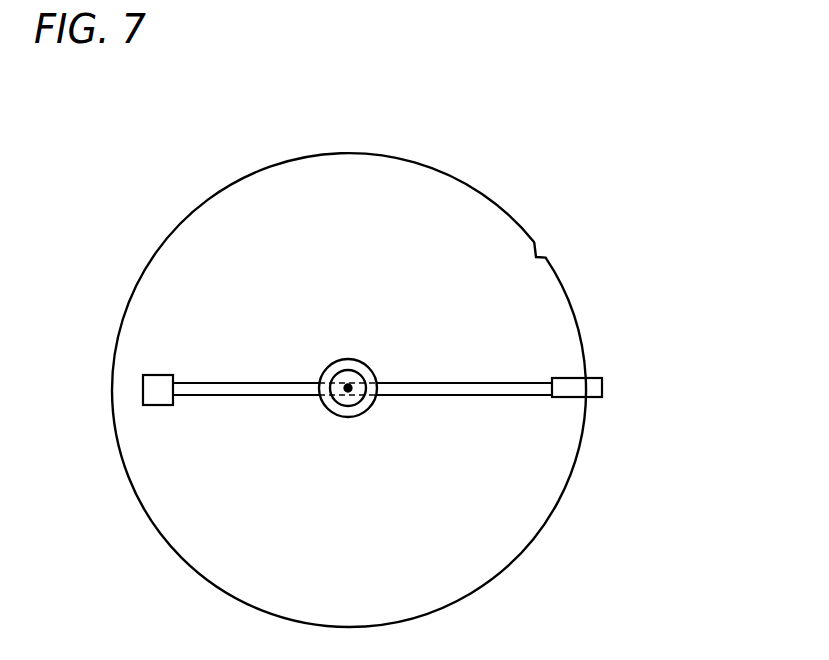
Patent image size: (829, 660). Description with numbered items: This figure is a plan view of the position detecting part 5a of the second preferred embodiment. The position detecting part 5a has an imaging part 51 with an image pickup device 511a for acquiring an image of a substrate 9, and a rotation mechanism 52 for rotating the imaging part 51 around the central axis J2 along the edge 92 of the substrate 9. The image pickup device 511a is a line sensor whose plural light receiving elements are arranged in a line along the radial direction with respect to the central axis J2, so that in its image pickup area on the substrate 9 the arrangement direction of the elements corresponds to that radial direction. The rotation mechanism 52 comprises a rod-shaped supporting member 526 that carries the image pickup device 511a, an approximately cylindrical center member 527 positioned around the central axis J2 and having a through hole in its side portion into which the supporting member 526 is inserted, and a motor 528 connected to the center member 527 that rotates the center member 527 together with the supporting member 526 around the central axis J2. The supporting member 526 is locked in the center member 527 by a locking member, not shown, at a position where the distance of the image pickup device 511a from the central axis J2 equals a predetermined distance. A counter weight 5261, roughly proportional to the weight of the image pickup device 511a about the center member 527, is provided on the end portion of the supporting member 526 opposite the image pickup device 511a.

The position detecting part 5a is at (652, 228).
The substrate 9 is at (550, 480).
The edge 92 is at (575, 462).
The rotation mechanism 52 is at (570, 157).
The supporting member 526 is at (441, 383).
The counter weight 5261 is at (158, 374).
The center member 527 is at (368, 378).
The motor 528 is at (349, 384).
The central axis J2 is at (355, 416).
The imaging part 51 is at (615, 315).
The image pickup device 511a is at (590, 387).